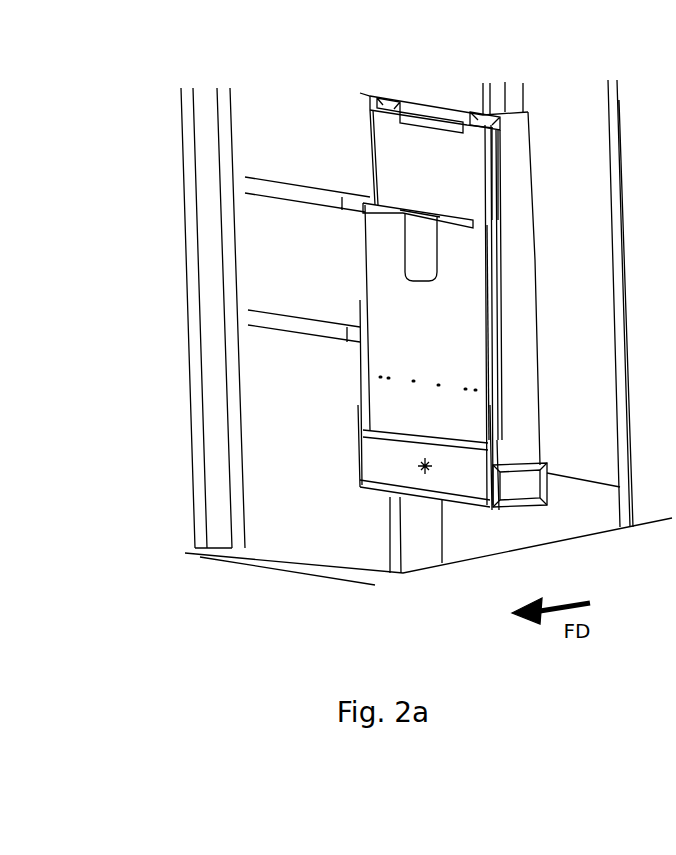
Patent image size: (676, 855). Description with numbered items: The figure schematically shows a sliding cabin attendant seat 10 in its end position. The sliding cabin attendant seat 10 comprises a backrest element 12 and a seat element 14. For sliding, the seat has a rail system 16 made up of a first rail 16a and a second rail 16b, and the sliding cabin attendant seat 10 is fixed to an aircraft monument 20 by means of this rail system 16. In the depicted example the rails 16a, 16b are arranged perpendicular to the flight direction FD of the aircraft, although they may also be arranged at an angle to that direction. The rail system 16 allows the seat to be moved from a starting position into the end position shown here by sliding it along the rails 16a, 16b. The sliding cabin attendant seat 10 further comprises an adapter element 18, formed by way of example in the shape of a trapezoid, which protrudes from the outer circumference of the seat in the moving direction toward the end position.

The sliding cabin attendant seat 10 is at (412, 410).
The backrest element 12 is at (455, 155).
The seat element 14 is at (465, 357).
The rail system 16 is at (252, 282).
The first rail 16a is at (280, 330).
The second rail 16b is at (260, 200).
The adapter element 18 is at (533, 503).
The aircraft monument 20 is at (290, 116).